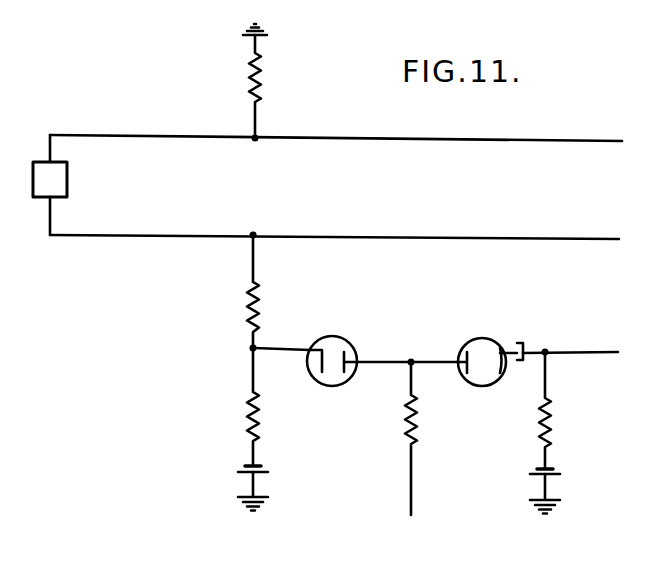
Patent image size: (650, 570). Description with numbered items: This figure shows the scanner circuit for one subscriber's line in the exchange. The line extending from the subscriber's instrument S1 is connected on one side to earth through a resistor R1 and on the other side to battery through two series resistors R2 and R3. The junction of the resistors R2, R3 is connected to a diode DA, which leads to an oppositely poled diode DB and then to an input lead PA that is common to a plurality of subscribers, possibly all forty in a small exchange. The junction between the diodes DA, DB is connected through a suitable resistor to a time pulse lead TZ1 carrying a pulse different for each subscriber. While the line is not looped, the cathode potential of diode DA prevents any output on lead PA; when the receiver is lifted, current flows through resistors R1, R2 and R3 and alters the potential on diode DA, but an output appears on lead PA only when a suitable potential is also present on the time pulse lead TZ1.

The subscriber's instrument S1 is at (69, 181).
The resistor R1 is at (273, 81).
The resistor R2 is at (230, 293).
The resistor R3 is at (236, 429).
The diode DA is at (355, 347).
The diode DB is at (538, 347).
The time pulse lead TZ1 is at (408, 452).
The input lead PA is at (563, 420).